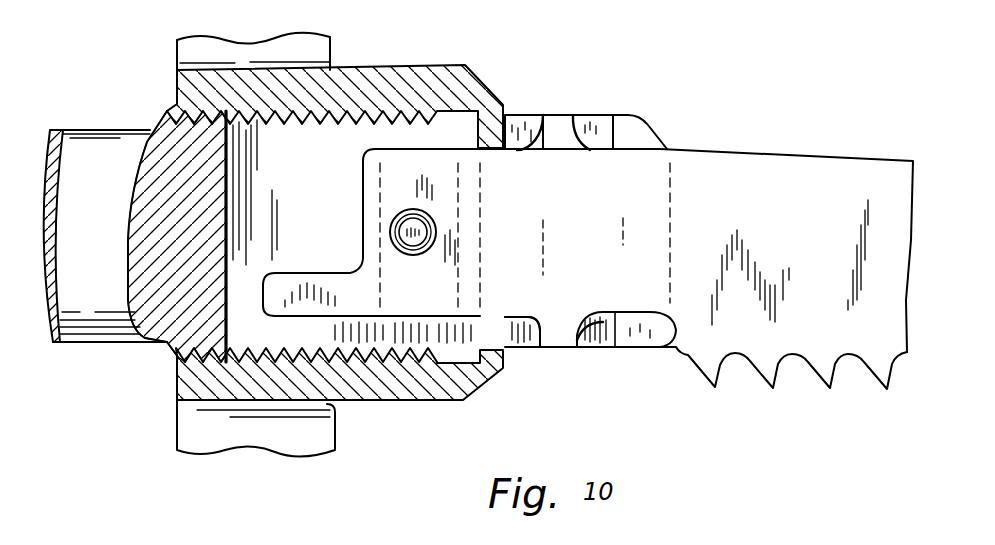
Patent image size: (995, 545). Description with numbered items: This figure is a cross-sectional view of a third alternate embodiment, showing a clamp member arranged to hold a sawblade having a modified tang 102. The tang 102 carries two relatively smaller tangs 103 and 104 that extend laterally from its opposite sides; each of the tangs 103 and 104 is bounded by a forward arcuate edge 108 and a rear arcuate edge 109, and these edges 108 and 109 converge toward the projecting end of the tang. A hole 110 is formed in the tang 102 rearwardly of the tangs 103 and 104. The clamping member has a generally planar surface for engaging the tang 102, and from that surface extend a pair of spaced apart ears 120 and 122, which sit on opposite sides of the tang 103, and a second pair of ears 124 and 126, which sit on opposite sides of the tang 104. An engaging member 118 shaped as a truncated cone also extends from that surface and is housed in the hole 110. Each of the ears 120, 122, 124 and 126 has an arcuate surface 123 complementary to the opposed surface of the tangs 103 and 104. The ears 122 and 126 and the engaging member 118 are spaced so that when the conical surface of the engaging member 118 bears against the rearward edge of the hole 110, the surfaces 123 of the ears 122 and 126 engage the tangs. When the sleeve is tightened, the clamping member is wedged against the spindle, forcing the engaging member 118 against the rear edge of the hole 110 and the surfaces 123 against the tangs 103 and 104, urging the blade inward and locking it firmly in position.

The tang 102 is at (400, 172).
The tang 103 is at (558, 118).
The tang 104 is at (563, 340).
The forward arcuate edge 108 is at (575, 118).
The rear arcuate edge 109 is at (538, 145).
The hole 110 is at (423, 256).
The engaging member 118 is at (393, 230).
The ear 120 is at (605, 135).
The ear 122 is at (520, 138).
The arcuate surface 123 is at (540, 142).
The ear 124 is at (600, 313).
The ear 126 is at (515, 318).